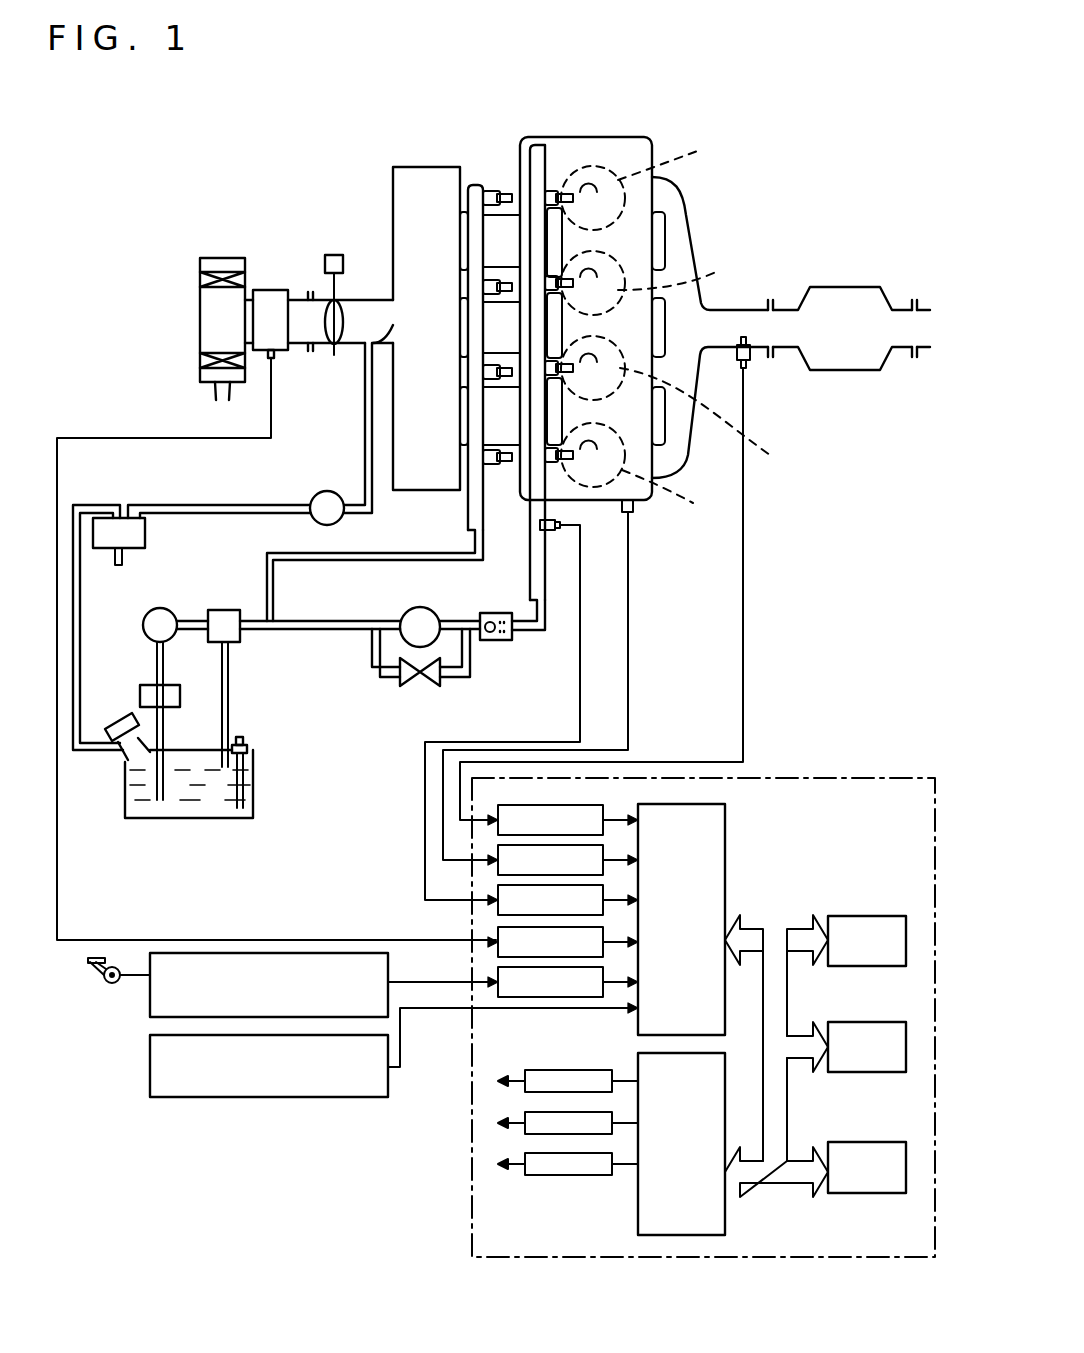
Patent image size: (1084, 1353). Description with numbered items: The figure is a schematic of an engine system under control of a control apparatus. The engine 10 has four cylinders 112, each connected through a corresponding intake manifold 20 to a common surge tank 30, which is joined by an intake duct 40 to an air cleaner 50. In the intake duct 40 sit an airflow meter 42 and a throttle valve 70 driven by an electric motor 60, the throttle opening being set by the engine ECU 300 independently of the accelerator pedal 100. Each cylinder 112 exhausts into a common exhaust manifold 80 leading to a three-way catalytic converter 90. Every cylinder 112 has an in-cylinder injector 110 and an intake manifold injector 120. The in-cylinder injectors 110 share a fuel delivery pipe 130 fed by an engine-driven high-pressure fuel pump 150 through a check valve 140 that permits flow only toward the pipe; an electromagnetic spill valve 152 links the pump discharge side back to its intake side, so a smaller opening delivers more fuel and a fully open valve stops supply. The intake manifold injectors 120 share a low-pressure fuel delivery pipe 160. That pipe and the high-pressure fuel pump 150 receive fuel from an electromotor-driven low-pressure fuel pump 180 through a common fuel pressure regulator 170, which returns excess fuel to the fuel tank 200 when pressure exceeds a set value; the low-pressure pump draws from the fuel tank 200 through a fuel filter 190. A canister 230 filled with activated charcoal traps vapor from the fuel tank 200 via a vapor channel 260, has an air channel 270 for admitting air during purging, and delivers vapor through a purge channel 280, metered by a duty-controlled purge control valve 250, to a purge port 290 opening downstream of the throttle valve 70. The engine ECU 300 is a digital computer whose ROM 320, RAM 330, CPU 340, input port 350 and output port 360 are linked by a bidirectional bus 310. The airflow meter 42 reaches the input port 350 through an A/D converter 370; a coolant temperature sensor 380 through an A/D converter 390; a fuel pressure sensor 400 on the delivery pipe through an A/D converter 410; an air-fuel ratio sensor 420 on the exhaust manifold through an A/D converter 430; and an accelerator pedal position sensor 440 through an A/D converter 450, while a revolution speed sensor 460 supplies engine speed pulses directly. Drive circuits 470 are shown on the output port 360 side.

The engine 10 is at (656, 132).
The intake manifold 20 is at (478, 185).
The surge tank 30 is at (405, 167).
The intake duct 40 is at (380, 300).
The airflow meter 42 is at (275, 290).
The air cleaner 50 is at (200, 320).
The electric motor 60 is at (330, 256).
The throttle valve 70 is at (338, 335).
The exhaust manifold 80 is at (690, 218).
The three-way catalytic converter 90 is at (848, 287).
The accelerator pedal 100 is at (97, 980).
The in-cylinder injector 110 is at (593, 326).
The cylinder 112 is at (716, 327).
The intake manifold injector 120 is at (483, 198).
The fuel delivery pipe 130 is at (539, 145).
The check valve 140 is at (497, 640).
The high-pressure fuel pump 150 is at (406, 610).
The electromagnetic spill valve 152 is at (425, 690).
The fuel delivery pipe 160 is at (468, 508).
The fuel pressure regulator 170 is at (224, 610).
The low-pressure fuel pump 180 is at (160, 608).
The fuel filter 190 is at (145, 688).
The fuel tank 200 is at (185, 818).
The canister 230 is at (120, 518).
The purge control valve 250 is at (327, 491).
The vapor channel 260 is at (80, 505).
The air channel 270 is at (118, 566).
The purge channel 280 is at (250, 505).
The purge port 290 is at (372, 340).
The engine ECU 300 is at (880, 766).
The bidirectional bus 310 is at (778, 928).
The ROM 320 is at (850, 916).
The RAM 330 is at (850, 1022).
The CPU 340 is at (850, 1142).
The input port 350 is at (725, 820).
The output port 360 is at (725, 1222).
The A/D converter 370 is at (490, 935).
The coolant temperature sensor 380 is at (636, 514).
The A/D converter 390 is at (490, 855).
The fuel pressure sensor 400 is at (562, 528).
The A/D converter 410 is at (490, 895).
The air-fuel ratio sensor 420 is at (755, 362).
The A/D converter 430 is at (490, 815).
The accelerator pedal position sensor 440 is at (150, 1000).
The A/D converter 450 is at (490, 978).
The revolution speed sensor 460 is at (150, 1070).
The drive circuit 470 is at (496, 1082).